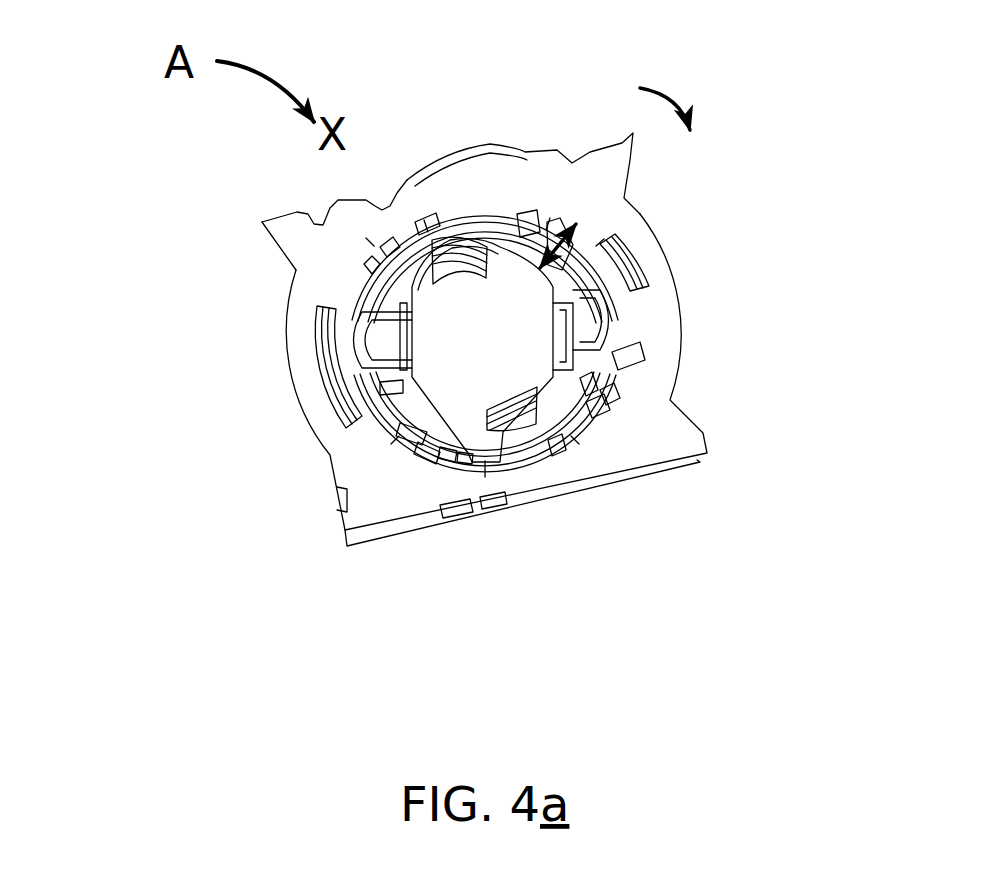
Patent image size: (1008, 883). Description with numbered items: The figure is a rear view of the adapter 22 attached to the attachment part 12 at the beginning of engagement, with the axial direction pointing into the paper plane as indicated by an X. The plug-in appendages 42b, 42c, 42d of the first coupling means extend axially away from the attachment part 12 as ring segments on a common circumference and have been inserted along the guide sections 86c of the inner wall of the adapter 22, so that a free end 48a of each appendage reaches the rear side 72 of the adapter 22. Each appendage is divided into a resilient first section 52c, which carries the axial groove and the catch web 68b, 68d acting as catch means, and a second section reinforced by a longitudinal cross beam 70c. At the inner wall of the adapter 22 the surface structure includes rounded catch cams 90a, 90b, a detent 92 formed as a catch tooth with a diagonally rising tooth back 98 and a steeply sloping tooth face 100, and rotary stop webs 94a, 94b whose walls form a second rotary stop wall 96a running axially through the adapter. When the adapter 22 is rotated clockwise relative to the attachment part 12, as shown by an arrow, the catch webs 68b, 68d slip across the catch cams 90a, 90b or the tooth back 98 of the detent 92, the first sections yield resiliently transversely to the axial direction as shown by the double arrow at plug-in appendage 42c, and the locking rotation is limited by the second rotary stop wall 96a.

The attachment part 12 is at (525, 317).
The adapter 22 is at (287, 197).
The plug-in appendage 42b is at (551, 459).
The plug-in appendage 42c is at (580, 262).
The plug-in appendage 42d is at (407, 243).
The free end 48a is at (407, 452).
The first section 52c is at (553, 230).
The catch web 68b is at (593, 413).
The catch web 68d is at (371, 261).
The longitudinal cross beam 70c is at (580, 280).
The rear side 72 is at (623, 230).
The guide section 86c is at (557, 452).
The catch cam 90a is at (383, 403).
The catch cam 90b is at (588, 390).
The detent 92 is at (400, 294).
The rotary stop web 94a is at (452, 458).
The rotary stop web 94b is at (612, 364).
The second rotary stop wall 96a is at (430, 457).
The tooth back 98 is at (366, 274).
The tooth face 100 is at (358, 300).